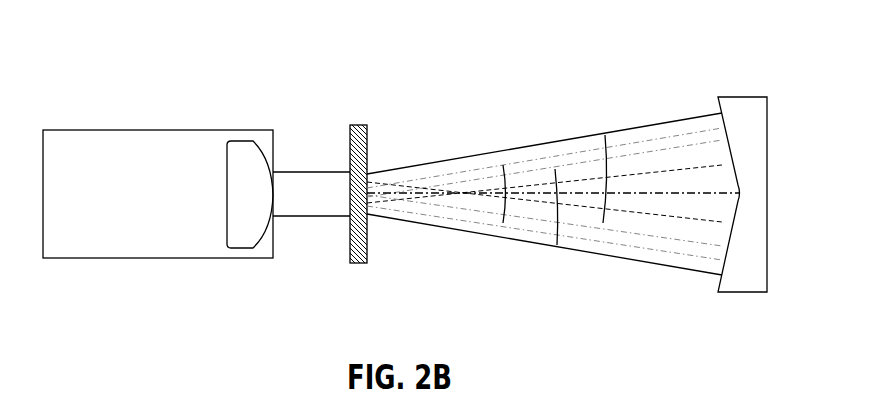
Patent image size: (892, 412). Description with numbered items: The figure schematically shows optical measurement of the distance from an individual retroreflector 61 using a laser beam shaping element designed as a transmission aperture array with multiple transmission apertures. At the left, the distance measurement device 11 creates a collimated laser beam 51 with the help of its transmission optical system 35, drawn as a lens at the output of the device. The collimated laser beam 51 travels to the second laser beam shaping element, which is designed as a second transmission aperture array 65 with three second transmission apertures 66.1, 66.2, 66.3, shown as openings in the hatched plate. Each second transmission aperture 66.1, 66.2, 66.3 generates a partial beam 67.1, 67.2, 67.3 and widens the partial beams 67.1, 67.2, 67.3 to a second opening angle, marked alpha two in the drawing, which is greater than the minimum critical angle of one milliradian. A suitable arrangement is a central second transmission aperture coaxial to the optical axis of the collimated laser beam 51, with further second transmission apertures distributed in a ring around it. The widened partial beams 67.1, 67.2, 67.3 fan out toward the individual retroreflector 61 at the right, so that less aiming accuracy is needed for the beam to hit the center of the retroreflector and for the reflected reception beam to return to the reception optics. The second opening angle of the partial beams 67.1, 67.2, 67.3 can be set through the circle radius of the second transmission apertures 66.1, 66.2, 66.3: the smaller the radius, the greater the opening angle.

The distance measurement device 11 is at (121, 128).
The transmission optical system 35 is at (240, 153).
The collimated laser beam 51 is at (308, 170).
The second transmission aperture array 65 is at (359, 125).
The second transmission aperture 66.1 is at (369, 172).
The second transmission aperture 66.2 is at (352, 195).
The second transmission aperture 66.3 is at (369, 218).
The partial beam 67.1 is at (570, 138).
The partial beam 67.2 is at (652, 140).
The partial beam 67.3 is at (604, 256).
The individual retroreflector 61 is at (743, 113).